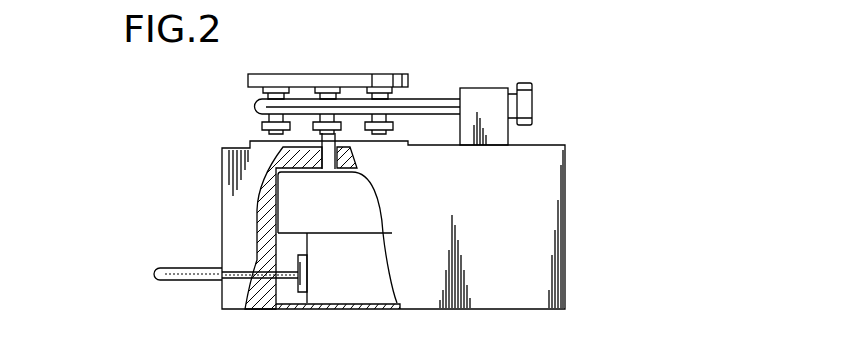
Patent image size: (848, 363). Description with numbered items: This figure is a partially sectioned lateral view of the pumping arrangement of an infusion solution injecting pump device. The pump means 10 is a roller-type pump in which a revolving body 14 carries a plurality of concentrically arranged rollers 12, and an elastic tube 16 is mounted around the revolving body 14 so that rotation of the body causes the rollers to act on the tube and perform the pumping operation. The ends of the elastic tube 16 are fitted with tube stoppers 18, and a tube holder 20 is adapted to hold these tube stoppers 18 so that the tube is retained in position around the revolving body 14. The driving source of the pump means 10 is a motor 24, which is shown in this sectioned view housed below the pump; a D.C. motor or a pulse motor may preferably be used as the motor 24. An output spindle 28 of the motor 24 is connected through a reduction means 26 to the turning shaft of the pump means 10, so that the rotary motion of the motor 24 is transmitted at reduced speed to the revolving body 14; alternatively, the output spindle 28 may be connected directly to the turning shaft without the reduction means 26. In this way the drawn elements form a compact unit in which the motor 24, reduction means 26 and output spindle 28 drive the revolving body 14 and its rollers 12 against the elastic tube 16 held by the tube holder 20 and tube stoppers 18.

The pump means 10 is at (358, 66).
The rollers 12 is at (265, 96).
The revolving body 14 is at (327, 80).
The elastic tube 16 is at (413, 105).
The tube stoppers 18 is at (527, 103).
The tube holder 20 is at (490, 95).
The motor 24 is at (360, 267).
The reduction means 26 is at (295, 198).
The output spindle 28 is at (345, 152).